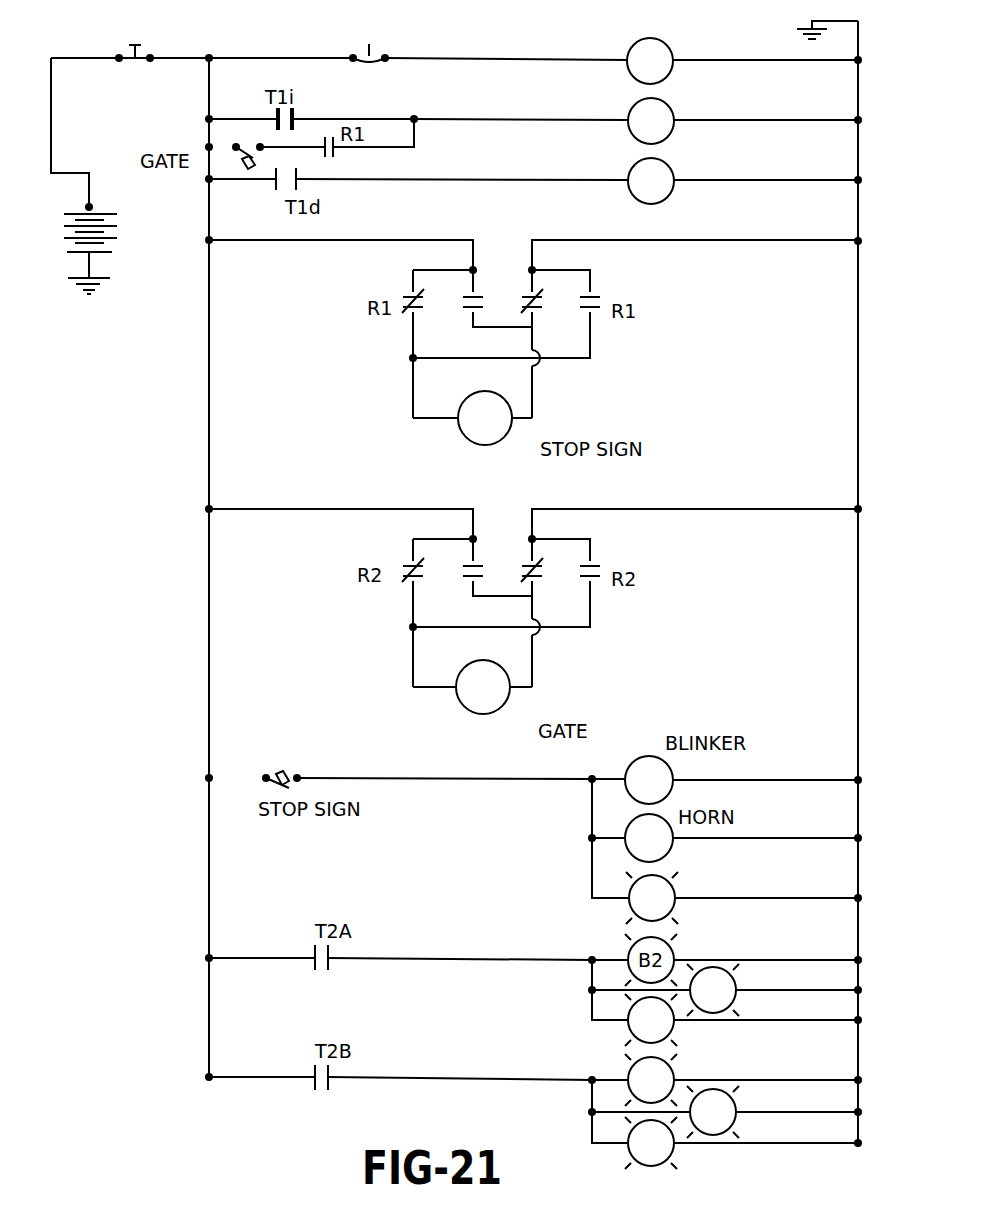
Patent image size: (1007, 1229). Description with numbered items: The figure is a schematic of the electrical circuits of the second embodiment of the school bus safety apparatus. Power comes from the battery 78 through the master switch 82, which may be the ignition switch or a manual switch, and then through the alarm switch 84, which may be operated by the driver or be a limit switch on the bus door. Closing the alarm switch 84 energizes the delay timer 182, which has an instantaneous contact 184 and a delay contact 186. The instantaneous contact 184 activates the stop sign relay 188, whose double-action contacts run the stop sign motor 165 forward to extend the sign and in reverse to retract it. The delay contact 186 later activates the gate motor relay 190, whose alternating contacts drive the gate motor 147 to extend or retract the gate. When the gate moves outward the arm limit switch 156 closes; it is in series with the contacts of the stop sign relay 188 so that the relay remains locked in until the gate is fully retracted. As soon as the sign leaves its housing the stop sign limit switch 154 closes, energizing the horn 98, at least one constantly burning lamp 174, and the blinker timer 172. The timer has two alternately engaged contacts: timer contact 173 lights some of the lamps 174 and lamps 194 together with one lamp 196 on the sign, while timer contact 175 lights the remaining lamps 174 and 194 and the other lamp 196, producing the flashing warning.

The master switch 82 is at (137, 52).
The alarm switch 84 is at (380, 52).
The delay timer 182 is at (636, 42).
The instantaneous contact 184 is at (278, 112).
The arm limit switch 156 is at (246, 146).
The delay contact 186 is at (275, 186).
The stop sign relay 188 is at (671, 110).
The gate motor relay 190 is at (668, 196).
The battery 78 is at (110, 242).
The stop sign motor 165 is at (470, 442).
The gate motor 147 is at (472, 712).
The stop sign limit switch 154 is at (297, 746).
The blinker timer 172 is at (672, 768).
The horn 98 is at (674, 850).
The lamp 174 is at (686, 908).
The timer contact 173 is at (330, 962).
The timer contact 175 is at (330, 1080).
The lamp 194 is at (736, 978).
The lamp 196 is at (630, 1034).